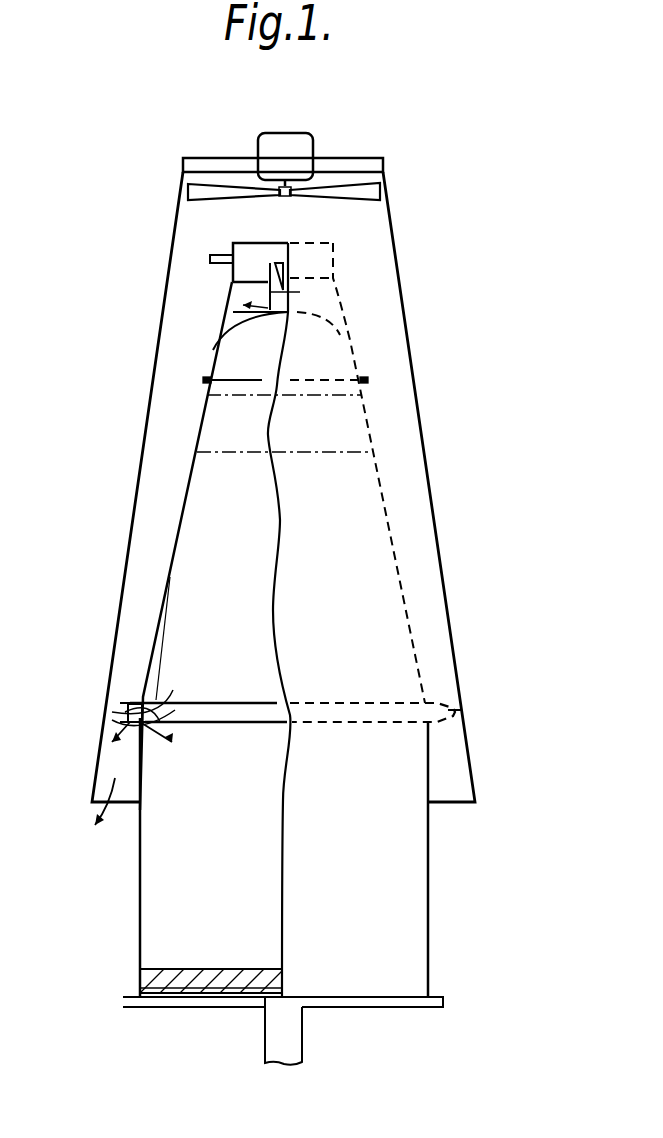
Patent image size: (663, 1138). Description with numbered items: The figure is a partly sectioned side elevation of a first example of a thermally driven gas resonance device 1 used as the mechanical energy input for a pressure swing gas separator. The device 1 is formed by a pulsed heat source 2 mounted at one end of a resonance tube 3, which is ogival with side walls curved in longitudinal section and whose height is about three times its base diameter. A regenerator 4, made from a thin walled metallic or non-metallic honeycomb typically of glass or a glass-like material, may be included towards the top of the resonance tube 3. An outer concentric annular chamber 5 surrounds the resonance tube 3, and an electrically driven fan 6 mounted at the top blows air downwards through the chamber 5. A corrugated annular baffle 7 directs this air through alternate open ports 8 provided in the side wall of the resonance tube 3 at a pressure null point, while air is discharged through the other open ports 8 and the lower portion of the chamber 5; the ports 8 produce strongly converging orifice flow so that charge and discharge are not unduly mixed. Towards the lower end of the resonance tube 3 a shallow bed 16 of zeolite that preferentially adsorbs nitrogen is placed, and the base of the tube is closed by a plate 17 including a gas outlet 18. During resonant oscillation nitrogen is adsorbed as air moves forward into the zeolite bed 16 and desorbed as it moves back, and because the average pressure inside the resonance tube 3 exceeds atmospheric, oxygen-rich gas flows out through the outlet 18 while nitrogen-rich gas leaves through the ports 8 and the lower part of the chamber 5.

The thermally driven gas resonance device 1 is at (492, 277).
The pulsed heat source 2 is at (262, 292).
The resonance tube 3 is at (398, 543).
The regenerator 4 is at (345, 433).
The outer concentric annular chamber 5 is at (172, 406).
The electrically driven fan 6 is at (345, 190).
The corrugated annular baffle 7 is at (110, 702).
The open ports 8 is at (132, 705).
The zeolite bed 16 is at (240, 985).
The plate 17 is at (183, 1000).
The gas outlet 18 is at (290, 1043).